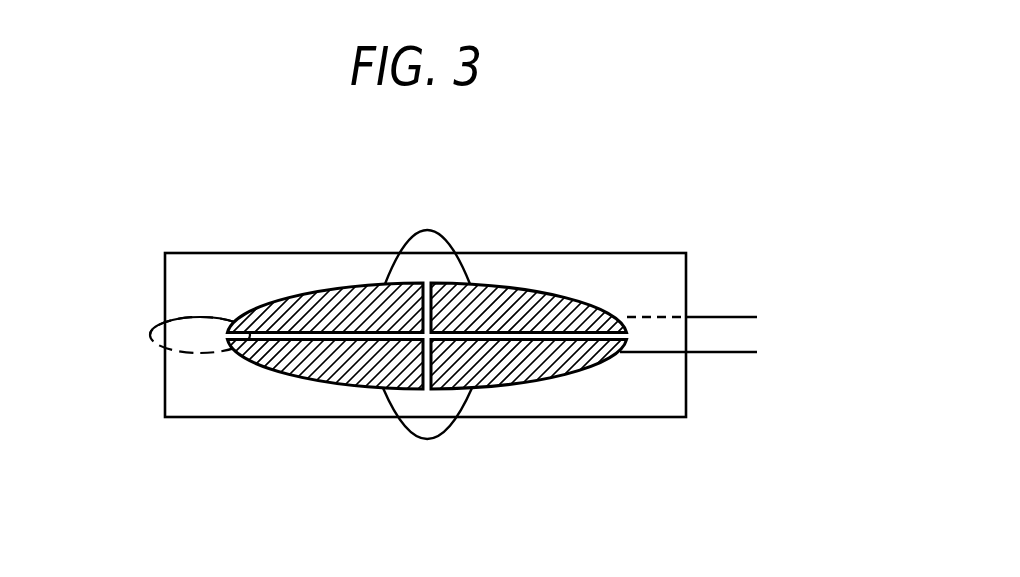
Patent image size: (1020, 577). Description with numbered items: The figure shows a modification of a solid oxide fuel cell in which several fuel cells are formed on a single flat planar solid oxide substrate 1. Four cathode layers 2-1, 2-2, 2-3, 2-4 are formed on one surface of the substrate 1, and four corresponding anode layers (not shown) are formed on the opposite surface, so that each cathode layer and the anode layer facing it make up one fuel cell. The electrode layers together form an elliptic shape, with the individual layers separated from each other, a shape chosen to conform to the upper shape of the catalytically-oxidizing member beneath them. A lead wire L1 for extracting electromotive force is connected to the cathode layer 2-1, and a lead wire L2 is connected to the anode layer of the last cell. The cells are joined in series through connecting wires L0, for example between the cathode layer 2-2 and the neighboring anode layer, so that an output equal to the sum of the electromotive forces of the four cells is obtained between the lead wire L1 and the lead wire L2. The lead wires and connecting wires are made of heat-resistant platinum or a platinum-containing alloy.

The solid oxide substrate 1 is at (647, 253).
The cathode layer 2-1 is at (518, 372).
The cathode layer 2-2 is at (320, 370).
The cathode layer 2-3 is at (318, 302).
The cathode layer 2-4 is at (517, 302).
The connecting wire L0 is at (150, 335).
The lead wire L1 is at (704, 352).
The lead wire L2 is at (707, 316).